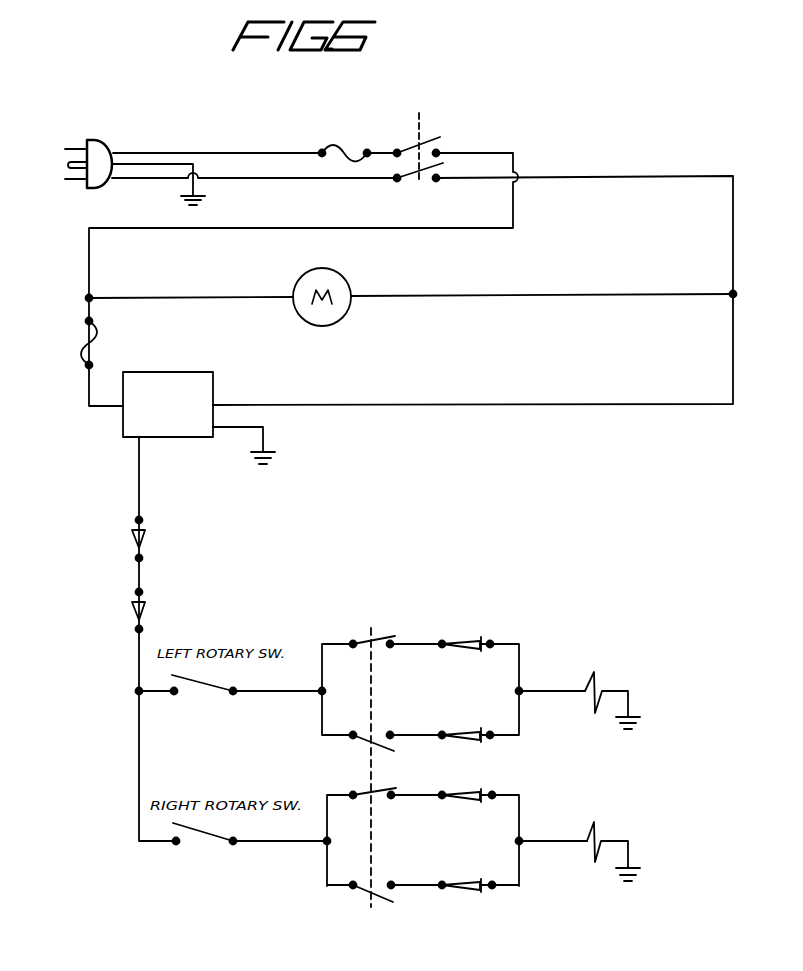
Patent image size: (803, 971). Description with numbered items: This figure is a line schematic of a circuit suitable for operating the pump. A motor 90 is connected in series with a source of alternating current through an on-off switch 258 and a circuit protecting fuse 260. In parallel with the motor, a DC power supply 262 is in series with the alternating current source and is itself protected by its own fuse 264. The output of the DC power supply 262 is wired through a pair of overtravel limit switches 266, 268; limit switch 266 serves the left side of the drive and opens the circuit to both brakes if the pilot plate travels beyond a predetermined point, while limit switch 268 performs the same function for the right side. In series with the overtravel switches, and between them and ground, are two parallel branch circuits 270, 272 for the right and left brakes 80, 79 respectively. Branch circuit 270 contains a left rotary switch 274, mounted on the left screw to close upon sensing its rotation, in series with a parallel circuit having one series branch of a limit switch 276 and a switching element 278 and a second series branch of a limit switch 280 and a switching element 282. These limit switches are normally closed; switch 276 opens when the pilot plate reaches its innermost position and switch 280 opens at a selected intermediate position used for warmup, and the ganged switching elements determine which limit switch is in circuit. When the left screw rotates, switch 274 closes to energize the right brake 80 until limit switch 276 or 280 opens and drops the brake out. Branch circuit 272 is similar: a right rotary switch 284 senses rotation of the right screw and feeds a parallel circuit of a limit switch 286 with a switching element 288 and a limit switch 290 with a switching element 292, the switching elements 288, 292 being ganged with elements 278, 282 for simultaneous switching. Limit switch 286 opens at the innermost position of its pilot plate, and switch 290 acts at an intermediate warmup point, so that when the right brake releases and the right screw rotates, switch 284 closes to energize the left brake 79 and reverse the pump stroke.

The circuit protecting fuse 260 is at (344, 141).
The on-off switch 258 is at (422, 132).
The motor 90 is at (350, 283).
The fuse 264 is at (100, 333).
The DC power supply 262 is at (214, 393).
The overtravel limit switch 266 is at (143, 538).
The overtravel limit switch 268 is at (143, 613).
The left rotary switch 274 is at (206, 683).
The right rotary switch 284 is at (200, 833).
The branch circuit 270 is at (425, 679).
The branch circuit 272 is at (429, 868).
The limit switch 276 is at (470, 641).
The switching element 278 is at (376, 640).
The limit switch 280 is at (481, 742).
The switching element 282 is at (378, 742).
The limit switch 286 is at (472, 793).
The switching element 288 is at (378, 793).
The limit switch 290 is at (490, 853).
The switching element 292 is at (389, 900).
The right brake 80 is at (594, 675).
The left brake 79 is at (594, 825).